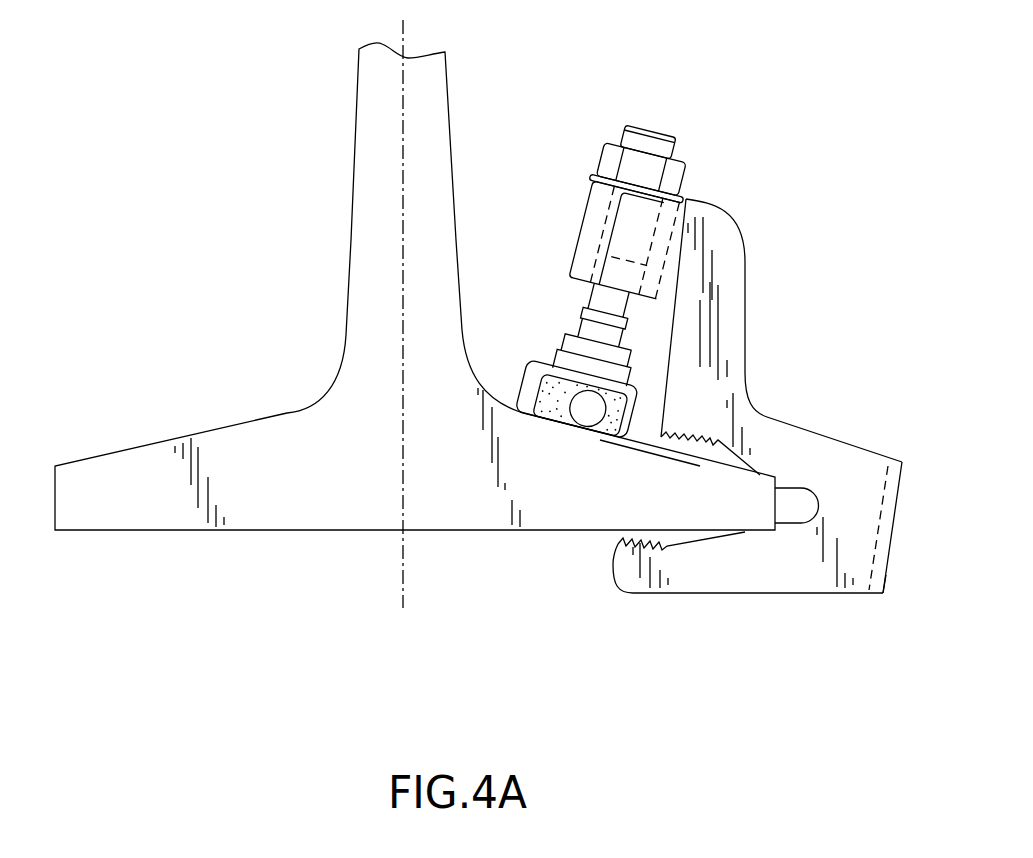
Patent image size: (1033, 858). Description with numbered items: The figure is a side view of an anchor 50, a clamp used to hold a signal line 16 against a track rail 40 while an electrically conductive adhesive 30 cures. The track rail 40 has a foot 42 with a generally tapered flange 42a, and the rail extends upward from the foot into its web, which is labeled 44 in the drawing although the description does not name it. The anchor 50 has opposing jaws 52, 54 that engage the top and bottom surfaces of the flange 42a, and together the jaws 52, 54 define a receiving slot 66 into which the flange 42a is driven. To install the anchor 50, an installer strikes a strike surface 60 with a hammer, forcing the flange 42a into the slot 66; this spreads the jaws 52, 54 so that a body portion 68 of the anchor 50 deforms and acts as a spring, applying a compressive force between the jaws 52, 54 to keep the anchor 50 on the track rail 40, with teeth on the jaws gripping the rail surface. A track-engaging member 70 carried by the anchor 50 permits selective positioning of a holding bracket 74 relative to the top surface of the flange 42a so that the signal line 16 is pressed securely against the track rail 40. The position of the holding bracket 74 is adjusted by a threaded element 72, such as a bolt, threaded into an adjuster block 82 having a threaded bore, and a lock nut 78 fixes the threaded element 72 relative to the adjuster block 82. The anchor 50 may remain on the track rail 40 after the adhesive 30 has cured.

The signal line 16 is at (592, 412).
The electrically conductive adhesive 30 is at (553, 413).
The track rail 40 is at (415, 323).
The foot 42 is at (372, 492).
The flange 42a is at (726, 509).
The airfoil 44 is at (443, 178).
The anchor 50 is at (767, 462).
The jaw 52 is at (767, 428).
The jaw 54 is at (695, 568).
The strike surface 60 is at (892, 560).
The receiving slot 66 is at (787, 512).
The body portion 68 is at (857, 483).
The track-engaging member 70 is at (651, 281).
The threaded element 72 is at (648, 125).
The holding bracket 74 is at (552, 365).
The lock nut 78 is at (622, 160).
The adjuster block 82 is at (598, 211).